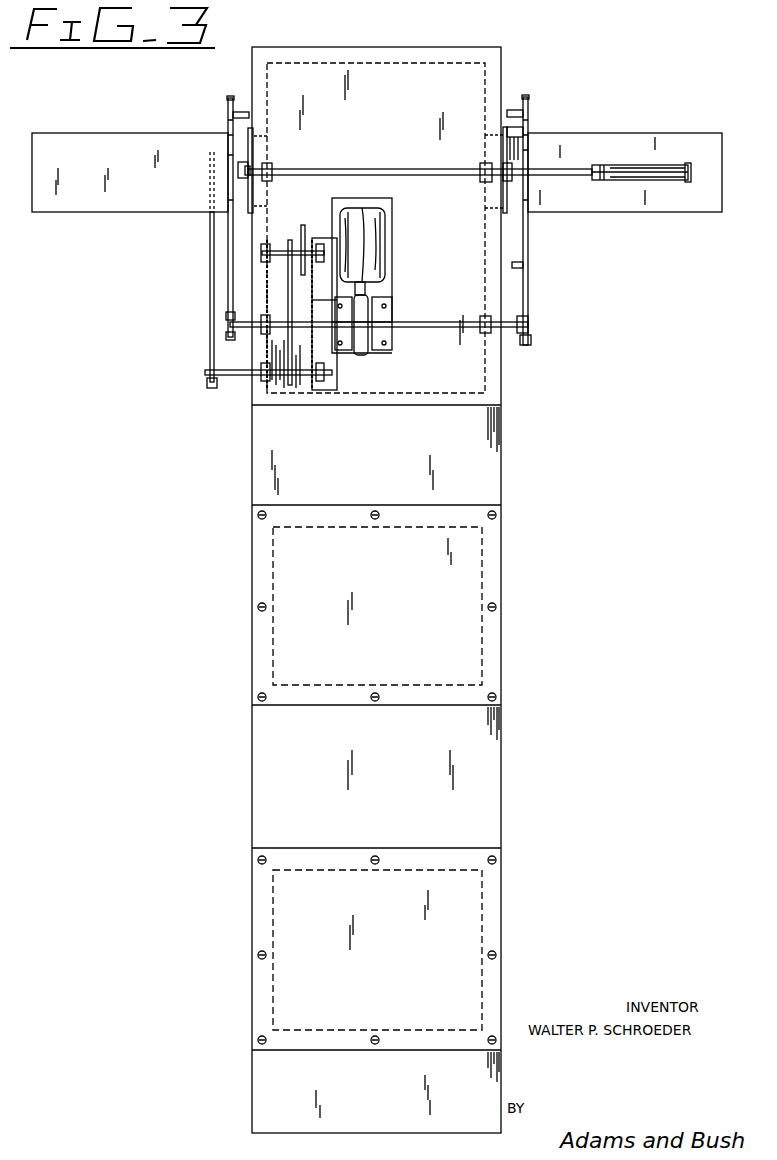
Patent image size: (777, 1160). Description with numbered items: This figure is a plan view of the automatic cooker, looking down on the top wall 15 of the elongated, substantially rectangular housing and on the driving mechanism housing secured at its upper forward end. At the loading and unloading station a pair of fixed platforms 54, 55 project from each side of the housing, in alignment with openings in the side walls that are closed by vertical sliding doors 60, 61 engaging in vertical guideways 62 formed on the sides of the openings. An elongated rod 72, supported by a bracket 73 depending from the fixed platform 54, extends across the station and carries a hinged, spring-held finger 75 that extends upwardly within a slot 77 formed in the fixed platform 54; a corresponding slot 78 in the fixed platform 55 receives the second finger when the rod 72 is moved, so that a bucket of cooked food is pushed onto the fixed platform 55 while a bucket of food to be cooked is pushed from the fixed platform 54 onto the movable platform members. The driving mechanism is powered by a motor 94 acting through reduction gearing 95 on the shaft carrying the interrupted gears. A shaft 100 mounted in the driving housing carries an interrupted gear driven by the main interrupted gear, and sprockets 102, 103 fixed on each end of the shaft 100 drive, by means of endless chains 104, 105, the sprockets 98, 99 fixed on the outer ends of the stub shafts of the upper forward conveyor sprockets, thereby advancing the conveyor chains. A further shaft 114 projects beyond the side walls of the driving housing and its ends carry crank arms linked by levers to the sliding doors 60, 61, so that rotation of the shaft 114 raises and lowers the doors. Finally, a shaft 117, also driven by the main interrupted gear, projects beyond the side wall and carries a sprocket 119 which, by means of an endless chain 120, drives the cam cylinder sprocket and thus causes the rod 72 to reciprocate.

The top wall 15 is at (275, 785).
The fixed platform 54 is at (610, 213).
The fixed platform 55 is at (136, 213).
The vertical sliding door 60 is at (512, 140).
The vertical sliding door 61 is at (245, 140).
The vertical guideways 62 is at (252, 138).
The rod 72 is at (594, 170).
The bracket 73 is at (604, 175).
The finger 75 is at (686, 166).
The slot 77 is at (658, 167).
The slot 78 is at (240, 172).
The motor 94 is at (383, 250).
The reduction gearing 95 is at (378, 352).
The sprocket 98 is at (527, 98).
The sprocket 99 is at (229, 98).
The shaft 100 is at (444, 320).
The sprocket 102 is at (528, 336).
The sprocket 103 is at (228, 318).
The endless chain 104 is at (528, 270).
The endless chain 105 is at (236, 336).
The shaft 114 is at (406, 166).
The shaft 117 is at (241, 376).
The sprocket 119 is at (210, 383).
The endless chain 120 is at (210, 300).